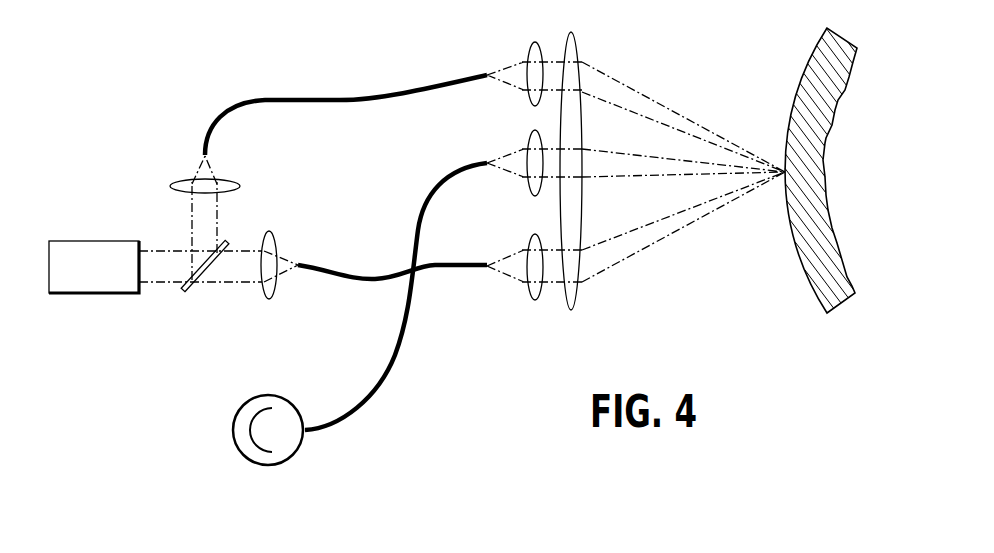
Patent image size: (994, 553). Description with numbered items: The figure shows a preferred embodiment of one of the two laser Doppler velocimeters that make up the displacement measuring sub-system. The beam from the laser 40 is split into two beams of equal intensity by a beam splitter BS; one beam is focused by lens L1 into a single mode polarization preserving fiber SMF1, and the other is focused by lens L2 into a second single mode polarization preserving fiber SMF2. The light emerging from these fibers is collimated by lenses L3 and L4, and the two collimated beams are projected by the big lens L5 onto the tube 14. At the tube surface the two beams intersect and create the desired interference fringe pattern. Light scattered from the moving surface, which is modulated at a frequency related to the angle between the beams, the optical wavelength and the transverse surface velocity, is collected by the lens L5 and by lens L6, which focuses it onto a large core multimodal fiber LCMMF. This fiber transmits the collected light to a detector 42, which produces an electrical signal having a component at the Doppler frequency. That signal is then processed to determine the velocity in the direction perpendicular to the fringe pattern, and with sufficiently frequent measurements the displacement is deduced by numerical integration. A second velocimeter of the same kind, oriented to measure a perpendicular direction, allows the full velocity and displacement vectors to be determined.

The laser 40 is at (77, 241).
The beam splitter BS is at (192, 297).
The lens L1 is at (230, 180).
The lens L2 is at (268, 237).
The lens L3 is at (532, 45).
The lens L4 is at (532, 235).
The big lens L5 is at (578, 43).
The lens L6 is at (532, 132).
The single mode polarization preserving fiber SMF1 is at (333, 98).
The single mode polarization preserving fiber SMF2 is at (342, 278).
The large core multimodal fiber LCMMF is at (383, 393).
The detector 42 is at (298, 450).
The tube 14 is at (807, 273).